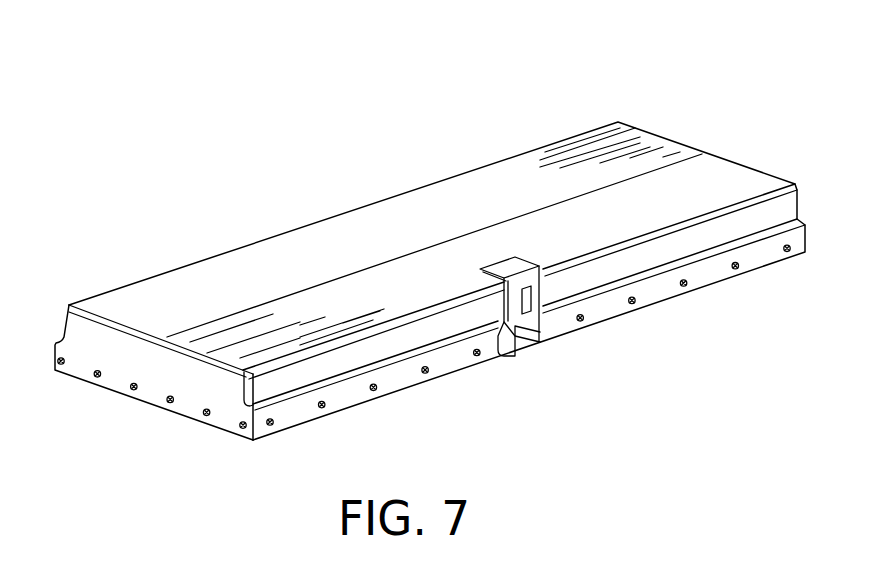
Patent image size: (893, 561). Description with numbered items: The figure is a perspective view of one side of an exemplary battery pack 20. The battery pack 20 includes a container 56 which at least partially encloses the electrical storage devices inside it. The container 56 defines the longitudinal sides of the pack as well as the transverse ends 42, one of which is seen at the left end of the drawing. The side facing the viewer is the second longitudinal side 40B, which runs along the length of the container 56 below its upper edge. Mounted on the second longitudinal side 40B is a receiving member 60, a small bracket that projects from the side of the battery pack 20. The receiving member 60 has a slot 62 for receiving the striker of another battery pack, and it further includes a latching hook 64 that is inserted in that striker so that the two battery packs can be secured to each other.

The battery pack 20 is at (655, 138).
The container 56 is at (755, 197).
The second longitudinal side 40B is at (755, 257).
The transverse end 42 is at (153, 390).
The receiving member 60 is at (513, 332).
The slot 62 is at (547, 330).
The latching hook 64 is at (542, 292).